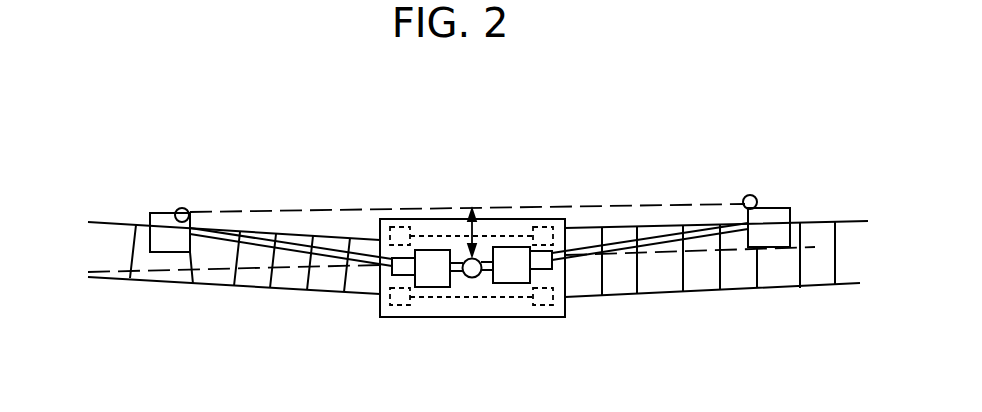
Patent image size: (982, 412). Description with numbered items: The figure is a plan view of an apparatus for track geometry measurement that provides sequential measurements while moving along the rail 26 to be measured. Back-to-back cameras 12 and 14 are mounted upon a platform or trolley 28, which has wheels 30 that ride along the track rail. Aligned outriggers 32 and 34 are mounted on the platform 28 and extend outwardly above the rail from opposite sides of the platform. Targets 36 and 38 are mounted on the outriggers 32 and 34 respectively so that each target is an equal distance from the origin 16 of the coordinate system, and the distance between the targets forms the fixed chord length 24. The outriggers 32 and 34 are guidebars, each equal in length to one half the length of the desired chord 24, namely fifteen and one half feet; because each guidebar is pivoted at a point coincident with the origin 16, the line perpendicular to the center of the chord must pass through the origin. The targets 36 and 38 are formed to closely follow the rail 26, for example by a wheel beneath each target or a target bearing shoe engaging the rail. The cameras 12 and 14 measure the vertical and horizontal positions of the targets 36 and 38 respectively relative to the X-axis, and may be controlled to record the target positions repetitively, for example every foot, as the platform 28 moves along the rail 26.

The camera 12 is at (437, 262).
The camera 14 is at (508, 256).
The origin 16 is at (472, 278).
The chord 24 is at (580, 207).
The rail 26 is at (833, 220).
The platform 28 is at (507, 317).
The wheels 30 is at (412, 226).
The outrigger 32 is at (292, 243).
The outrigger 34 is at (660, 248).
The target 36 is at (188, 207).
The target 38 is at (750, 195).